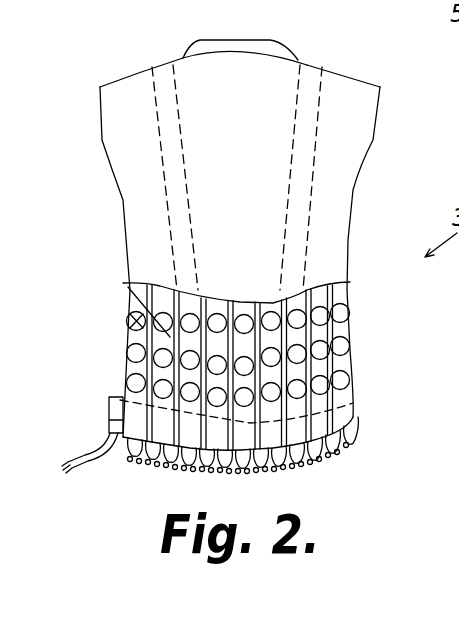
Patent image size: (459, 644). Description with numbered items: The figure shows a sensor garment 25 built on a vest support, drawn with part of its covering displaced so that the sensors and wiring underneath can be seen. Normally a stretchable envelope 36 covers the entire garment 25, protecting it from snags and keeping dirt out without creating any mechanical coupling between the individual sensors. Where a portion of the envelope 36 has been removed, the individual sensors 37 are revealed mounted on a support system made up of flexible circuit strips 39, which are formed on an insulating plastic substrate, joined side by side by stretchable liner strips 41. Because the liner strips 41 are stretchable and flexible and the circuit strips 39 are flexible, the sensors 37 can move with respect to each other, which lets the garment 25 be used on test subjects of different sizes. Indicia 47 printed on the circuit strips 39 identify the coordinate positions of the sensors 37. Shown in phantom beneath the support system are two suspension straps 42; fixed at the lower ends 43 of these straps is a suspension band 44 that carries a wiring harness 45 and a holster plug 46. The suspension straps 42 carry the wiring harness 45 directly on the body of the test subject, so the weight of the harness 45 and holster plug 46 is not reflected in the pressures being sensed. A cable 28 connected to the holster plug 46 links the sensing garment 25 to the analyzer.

The sensor garment 25 is at (177, 62).
The suspension straps 42 is at (165, 82).
The stretchable envelope 36 is at (367, 83).
The indicia 47 is at (132, 330).
The flexible circuit strips 39 is at (297, 337).
The sensors 37 is at (343, 380).
The suspension band 44 is at (350, 403).
The stretchable liner strips 41 is at (340, 420).
The lower ends 43 is at (315, 457).
The wiring harness 45 is at (302, 467).
The holster plug 46 is at (112, 400).
The cable 28 is at (95, 450).